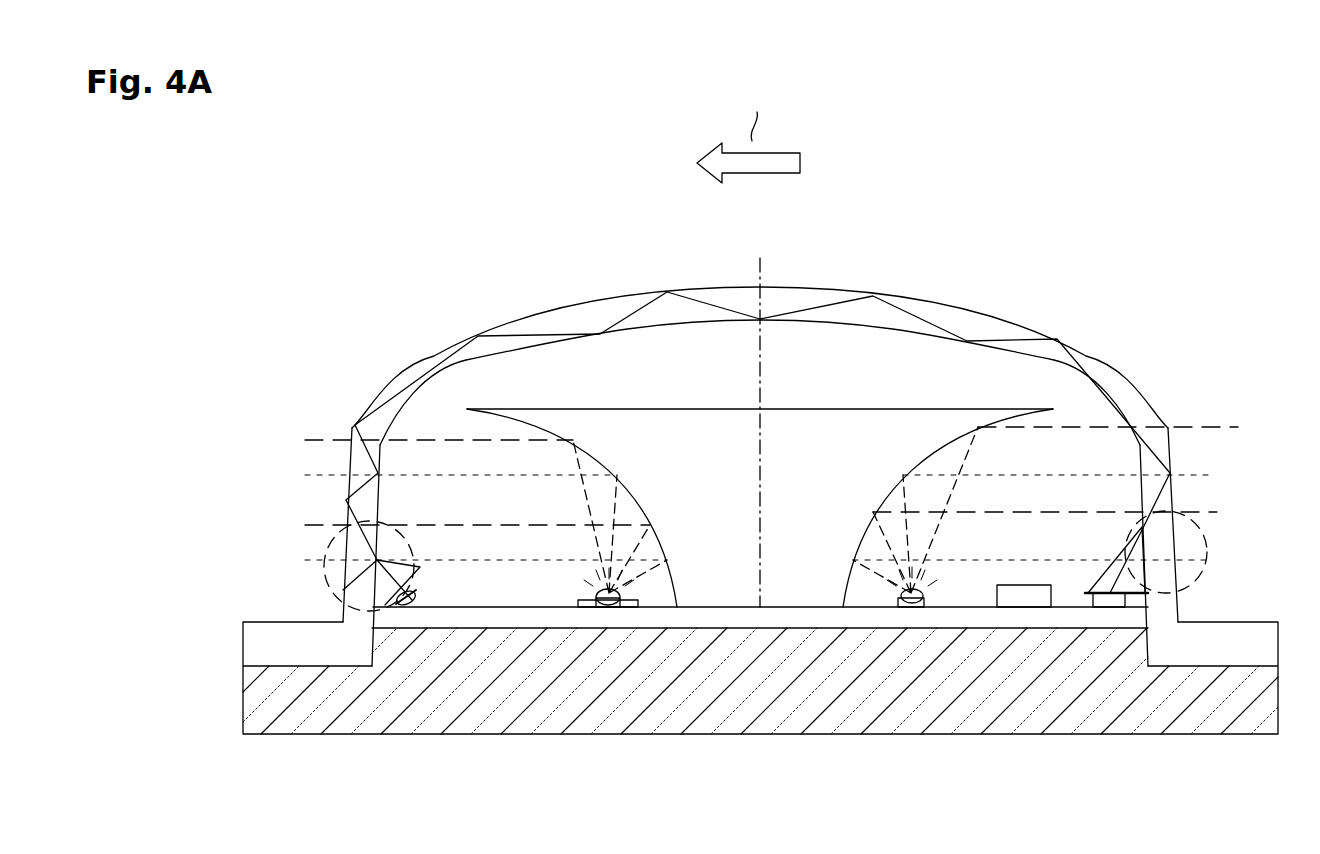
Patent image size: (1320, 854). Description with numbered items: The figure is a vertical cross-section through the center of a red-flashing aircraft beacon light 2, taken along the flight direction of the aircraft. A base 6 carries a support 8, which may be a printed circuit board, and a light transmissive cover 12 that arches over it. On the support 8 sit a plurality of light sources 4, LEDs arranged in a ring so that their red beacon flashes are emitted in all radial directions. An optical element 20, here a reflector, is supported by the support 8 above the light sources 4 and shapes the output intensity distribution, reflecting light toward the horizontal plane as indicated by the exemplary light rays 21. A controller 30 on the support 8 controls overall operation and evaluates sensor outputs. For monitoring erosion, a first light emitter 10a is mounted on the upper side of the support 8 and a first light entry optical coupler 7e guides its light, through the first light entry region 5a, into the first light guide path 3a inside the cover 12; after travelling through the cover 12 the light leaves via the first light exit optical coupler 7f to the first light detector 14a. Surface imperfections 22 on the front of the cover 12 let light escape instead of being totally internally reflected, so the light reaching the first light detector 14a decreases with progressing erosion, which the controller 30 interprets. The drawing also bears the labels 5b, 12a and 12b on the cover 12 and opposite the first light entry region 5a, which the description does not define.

The aircraft beacon light 2 is at (760, 509).
The first light guide path 3a is at (390, 466).
The light sources 4 is at (757, 693).
The first light entry region 5a is at (327, 566).
The light exit region 5b is at (1222, 552).
The base 6 is at (760, 720).
The first light entry optical coupler 7e is at (310, 588).
The first light exit optical coupler 7f is at (1200, 566).
The support 8 is at (760, 713).
The first light emitter 10a is at (420, 703).
The light transmissive cover 12 is at (783, 432).
The inner surface of cover 12a is at (760, 322).
The outer surface of cover 12b is at (760, 325).
The first light detector 14a is at (1087, 706).
The optical element 20 is at (760, 409).
The light rays 21 is at (780, 493).
The surface imperfections 22 is at (705, 442).
The controller 30 is at (1011, 702).